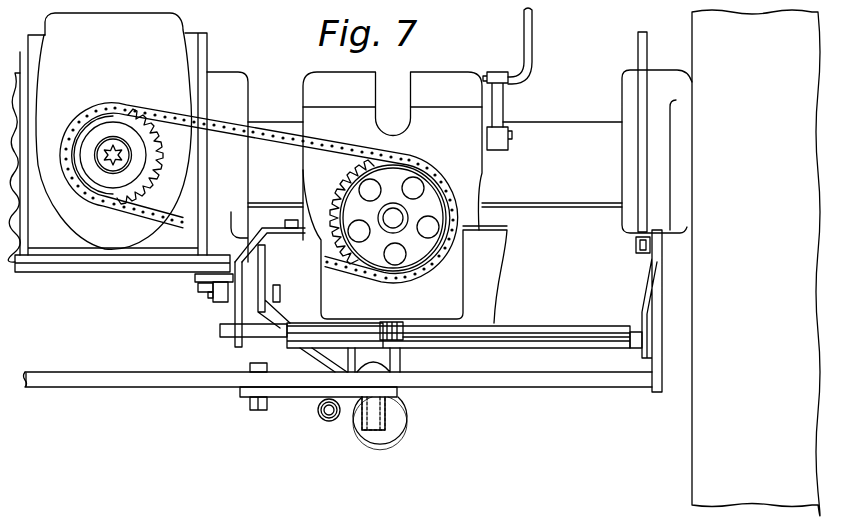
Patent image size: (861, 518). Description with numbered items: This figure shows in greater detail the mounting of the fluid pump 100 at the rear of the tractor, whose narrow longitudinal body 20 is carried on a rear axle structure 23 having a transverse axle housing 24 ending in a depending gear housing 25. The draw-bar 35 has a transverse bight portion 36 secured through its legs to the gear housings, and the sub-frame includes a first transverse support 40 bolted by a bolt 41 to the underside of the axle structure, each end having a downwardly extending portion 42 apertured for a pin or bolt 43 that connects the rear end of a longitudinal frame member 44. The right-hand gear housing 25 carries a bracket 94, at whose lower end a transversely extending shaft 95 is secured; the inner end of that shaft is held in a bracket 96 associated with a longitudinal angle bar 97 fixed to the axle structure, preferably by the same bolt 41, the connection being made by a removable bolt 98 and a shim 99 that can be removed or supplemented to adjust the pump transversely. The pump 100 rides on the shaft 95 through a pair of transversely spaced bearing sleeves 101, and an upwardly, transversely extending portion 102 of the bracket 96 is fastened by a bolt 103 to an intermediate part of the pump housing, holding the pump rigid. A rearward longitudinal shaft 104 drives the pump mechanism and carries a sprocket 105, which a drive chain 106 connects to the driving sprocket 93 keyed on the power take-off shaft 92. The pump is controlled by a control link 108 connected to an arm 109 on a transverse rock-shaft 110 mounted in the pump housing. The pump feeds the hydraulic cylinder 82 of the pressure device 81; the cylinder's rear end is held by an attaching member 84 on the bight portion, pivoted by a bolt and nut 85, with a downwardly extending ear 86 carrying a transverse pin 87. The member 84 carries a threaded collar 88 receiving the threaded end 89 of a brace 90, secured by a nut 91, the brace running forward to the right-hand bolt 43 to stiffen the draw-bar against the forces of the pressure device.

The body 20 is at (163, 50).
The rear axle structure 23 is at (288, 112).
The axle housing 24 is at (600, 136).
The depending gear housing 25 is at (678, 348).
The draw-bar 35 is at (109, 398).
The transverse bight portion 36 is at (150, 385).
The first transverse support 40 is at (80, 270).
The bolt 41 is at (200, 288).
The downwardly extending portion 42 is at (245, 335).
The pin or bolt 43 is at (280, 293).
The frame member 44 is at (265, 255).
The pressure device 81 is at (413, 403).
The hydraulic cylinder 82 is at (403, 360).
The attaching member 84 is at (240, 393).
The bolt and nut 85 is at (252, 408).
The downwardly extending ear 86 is at (382, 430).
The transverse pin 87 is at (400, 417).
The threaded collar 88 is at (334, 418).
The threaded end 89 is at (325, 414).
The brace 90 is at (310, 367).
The nut 91 is at (328, 420).
The power take-off shaft 92 is at (103, 147).
The driving sprocket 93 is at (113, 185).
The bracket 94 is at (652, 295).
The shaft 95 is at (557, 333).
The bracket 96 is at (233, 347).
The angle bar 97 is at (200, 276).
The removable bolt 98 is at (213, 309).
The shim 99 is at (232, 313).
The fluid pump 100 is at (453, 77).
The bearing sleeve 101 is at (433, 327).
The upwardly, transversely extending portion 102 is at (277, 226).
The bolt 103 is at (295, 217).
The shaft 104 is at (400, 218).
The sprocket 105 is at (430, 193).
The drive chain 106 is at (360, 138).
The control link 108 is at (533, 25).
The arm 109 is at (502, 98).
The rock-shaft 110 is at (508, 140).